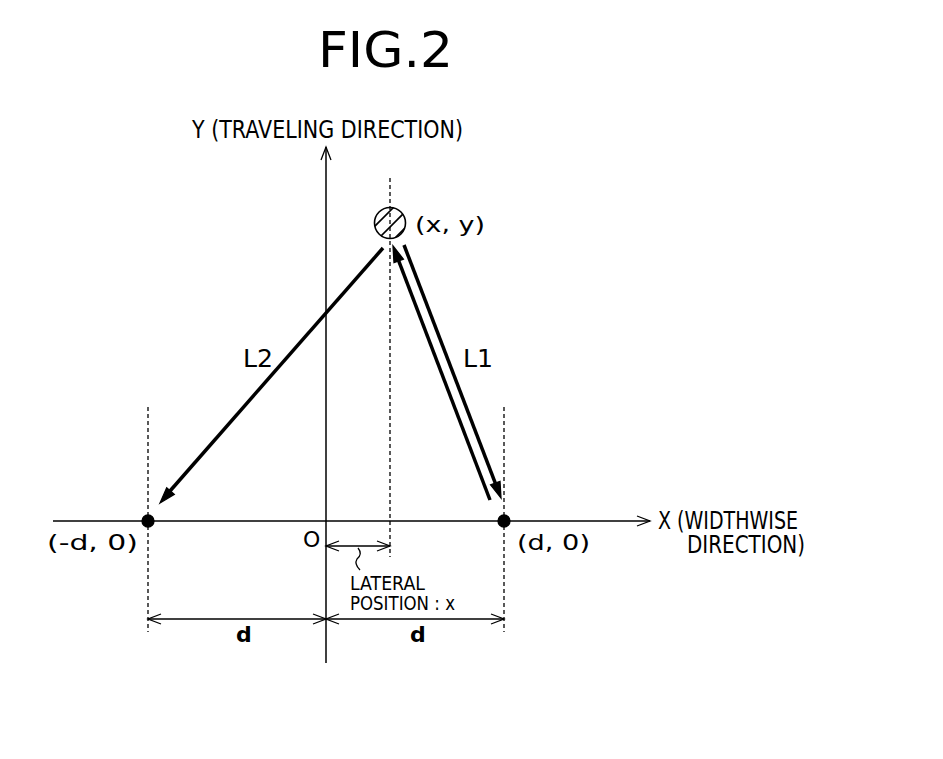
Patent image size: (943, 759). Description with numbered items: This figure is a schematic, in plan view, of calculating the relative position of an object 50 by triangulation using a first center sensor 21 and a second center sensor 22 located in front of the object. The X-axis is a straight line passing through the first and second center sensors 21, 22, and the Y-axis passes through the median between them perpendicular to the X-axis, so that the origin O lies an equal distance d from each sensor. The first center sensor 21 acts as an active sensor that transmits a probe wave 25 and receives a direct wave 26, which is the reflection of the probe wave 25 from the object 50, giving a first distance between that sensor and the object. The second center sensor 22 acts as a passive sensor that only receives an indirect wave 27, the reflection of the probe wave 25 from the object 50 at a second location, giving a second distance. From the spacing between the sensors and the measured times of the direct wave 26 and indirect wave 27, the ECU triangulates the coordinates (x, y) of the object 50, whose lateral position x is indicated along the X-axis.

The object 50 is at (379, 211).
The first center sensor 21 is at (509, 518).
The second center sensor 22 is at (145, 518).
The probe wave 25 is at (464, 442).
The direct wave 26 is at (433, 313).
The indirect wave 27 is at (214, 447).